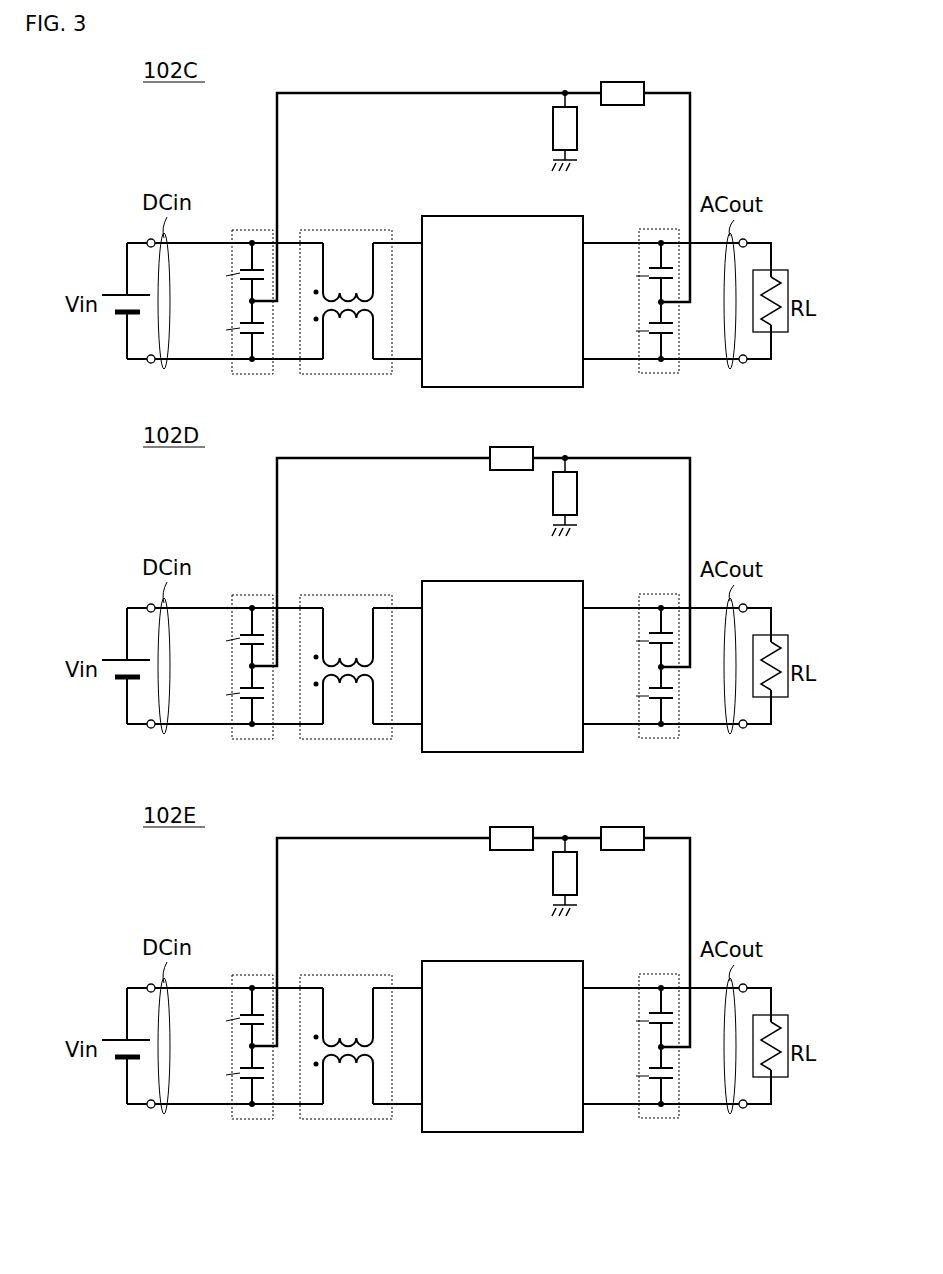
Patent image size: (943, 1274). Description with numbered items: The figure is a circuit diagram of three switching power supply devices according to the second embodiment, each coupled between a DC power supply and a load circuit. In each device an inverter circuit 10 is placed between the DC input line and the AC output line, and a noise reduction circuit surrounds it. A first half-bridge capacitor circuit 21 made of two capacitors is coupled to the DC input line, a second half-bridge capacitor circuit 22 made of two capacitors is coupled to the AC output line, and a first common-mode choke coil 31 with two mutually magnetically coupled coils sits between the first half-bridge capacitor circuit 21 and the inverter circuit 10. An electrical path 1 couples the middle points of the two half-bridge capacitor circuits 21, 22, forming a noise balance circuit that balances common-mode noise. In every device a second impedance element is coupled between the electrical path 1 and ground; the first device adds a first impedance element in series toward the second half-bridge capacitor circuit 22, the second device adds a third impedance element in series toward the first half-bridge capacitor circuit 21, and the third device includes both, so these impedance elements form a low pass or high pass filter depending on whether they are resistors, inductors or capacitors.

The electrical path 1 is at (397, 92).
The inverter circuit 10 is at (504, 216).
The first half-bridge capacitor circuit 21 is at (248, 229).
The second half-bridge capacitor circuit 22 is at (655, 229).
The first common-mode choke coil 31 is at (344, 229).